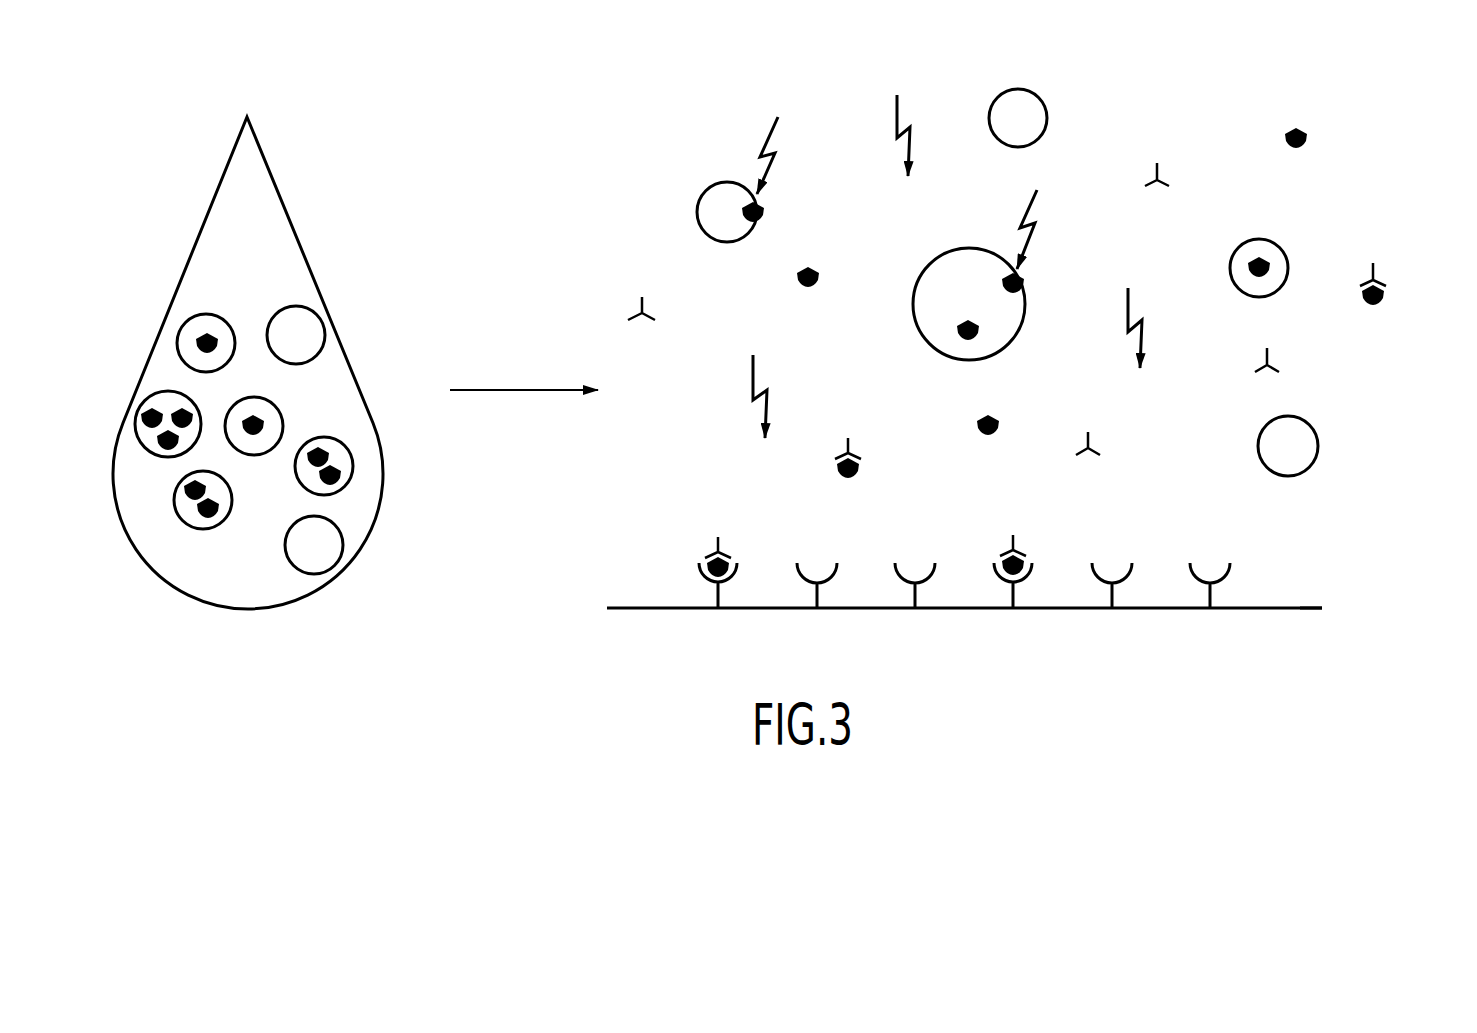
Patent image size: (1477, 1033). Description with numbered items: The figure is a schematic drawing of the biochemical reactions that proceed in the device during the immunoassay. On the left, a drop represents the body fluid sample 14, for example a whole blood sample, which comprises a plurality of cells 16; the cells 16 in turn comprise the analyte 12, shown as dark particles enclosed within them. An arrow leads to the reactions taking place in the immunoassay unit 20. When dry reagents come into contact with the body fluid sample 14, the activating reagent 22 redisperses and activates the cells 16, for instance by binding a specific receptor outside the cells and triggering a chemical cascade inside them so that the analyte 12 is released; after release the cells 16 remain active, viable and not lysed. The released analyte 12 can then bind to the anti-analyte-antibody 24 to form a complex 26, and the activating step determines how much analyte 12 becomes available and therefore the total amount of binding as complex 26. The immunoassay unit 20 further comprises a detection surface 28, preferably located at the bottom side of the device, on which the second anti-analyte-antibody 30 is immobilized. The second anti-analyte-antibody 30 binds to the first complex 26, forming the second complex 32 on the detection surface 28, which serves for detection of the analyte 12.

The analyte 12 is at (197, 343).
The body fluid sample 14 is at (287, 213).
The cells 16 is at (353, 463).
The immunoassay unit 20 is at (1314, 594).
The activating reagent 22 is at (1030, 238).
The anti-analyte-antibody 24 is at (1163, 172).
The complex 26 is at (1409, 260).
The detection surface 28 is at (975, 611).
The second anti-analyte-antibody 30 is at (918, 593).
The second complex 32 is at (739, 541).